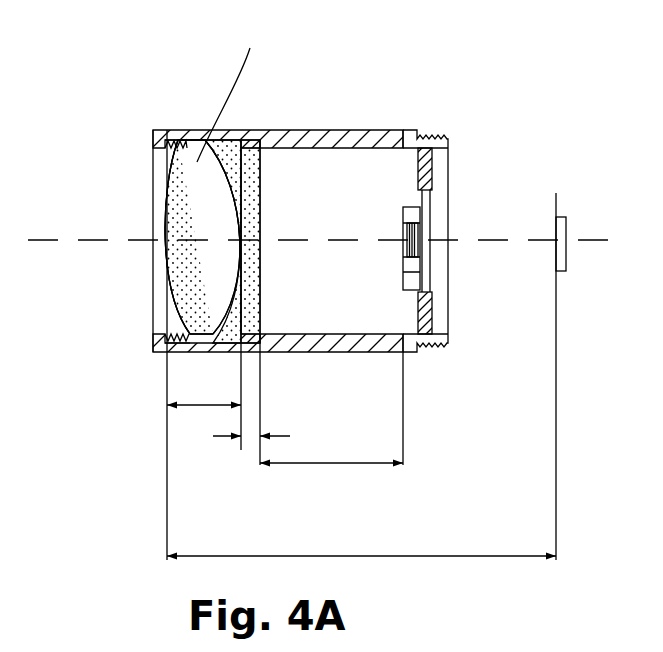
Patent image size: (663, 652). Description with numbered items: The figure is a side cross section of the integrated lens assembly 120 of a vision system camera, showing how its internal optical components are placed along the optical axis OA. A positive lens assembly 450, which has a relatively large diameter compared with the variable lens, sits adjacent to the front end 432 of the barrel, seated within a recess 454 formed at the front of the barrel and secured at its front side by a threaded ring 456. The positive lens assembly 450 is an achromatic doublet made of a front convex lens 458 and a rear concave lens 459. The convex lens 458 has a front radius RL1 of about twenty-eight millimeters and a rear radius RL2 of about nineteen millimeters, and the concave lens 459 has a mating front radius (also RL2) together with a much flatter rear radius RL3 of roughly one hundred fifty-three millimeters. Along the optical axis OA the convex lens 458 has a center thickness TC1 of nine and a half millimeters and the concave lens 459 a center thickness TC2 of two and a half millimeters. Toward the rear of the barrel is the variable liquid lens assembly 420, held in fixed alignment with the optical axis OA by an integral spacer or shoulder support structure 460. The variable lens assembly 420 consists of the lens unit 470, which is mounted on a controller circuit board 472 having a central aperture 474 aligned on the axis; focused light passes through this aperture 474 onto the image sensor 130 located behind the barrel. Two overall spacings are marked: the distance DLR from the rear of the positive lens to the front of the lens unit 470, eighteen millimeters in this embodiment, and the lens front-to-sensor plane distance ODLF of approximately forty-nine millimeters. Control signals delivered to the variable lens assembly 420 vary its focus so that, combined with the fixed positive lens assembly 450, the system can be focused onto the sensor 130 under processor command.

The lens assembly 120 is at (465, 90).
The image sensor 130 is at (566, 248).
The variable lens assembly 420 is at (441, 206).
The front end 432 is at (146, 351).
The positive lens assembly 450 is at (191, 216).
The recess 454 is at (250, 332).
The threaded ring 456 is at (178, 143).
The convex lens 458 is at (236, 93).
The concave lens 459 is at (244, 141).
The support structure 460 is at (450, 160).
The lens unit 470 is at (403, 215).
The controller circuit board 472 is at (432, 295).
The central aperture 474 is at (441, 252).
The front radius RL1 is at (167, 164).
The rear radius RL2 is at (231, 163).
The rear radius RL3 is at (273, 175).
The optical axis OA is at (98, 242).
The center thickness TC1 is at (203, 402).
The center thickness TC2 is at (277, 437).
The distance DLR is at (316, 464).
The lens front-to-sensor plane distance ODLF is at (417, 558).